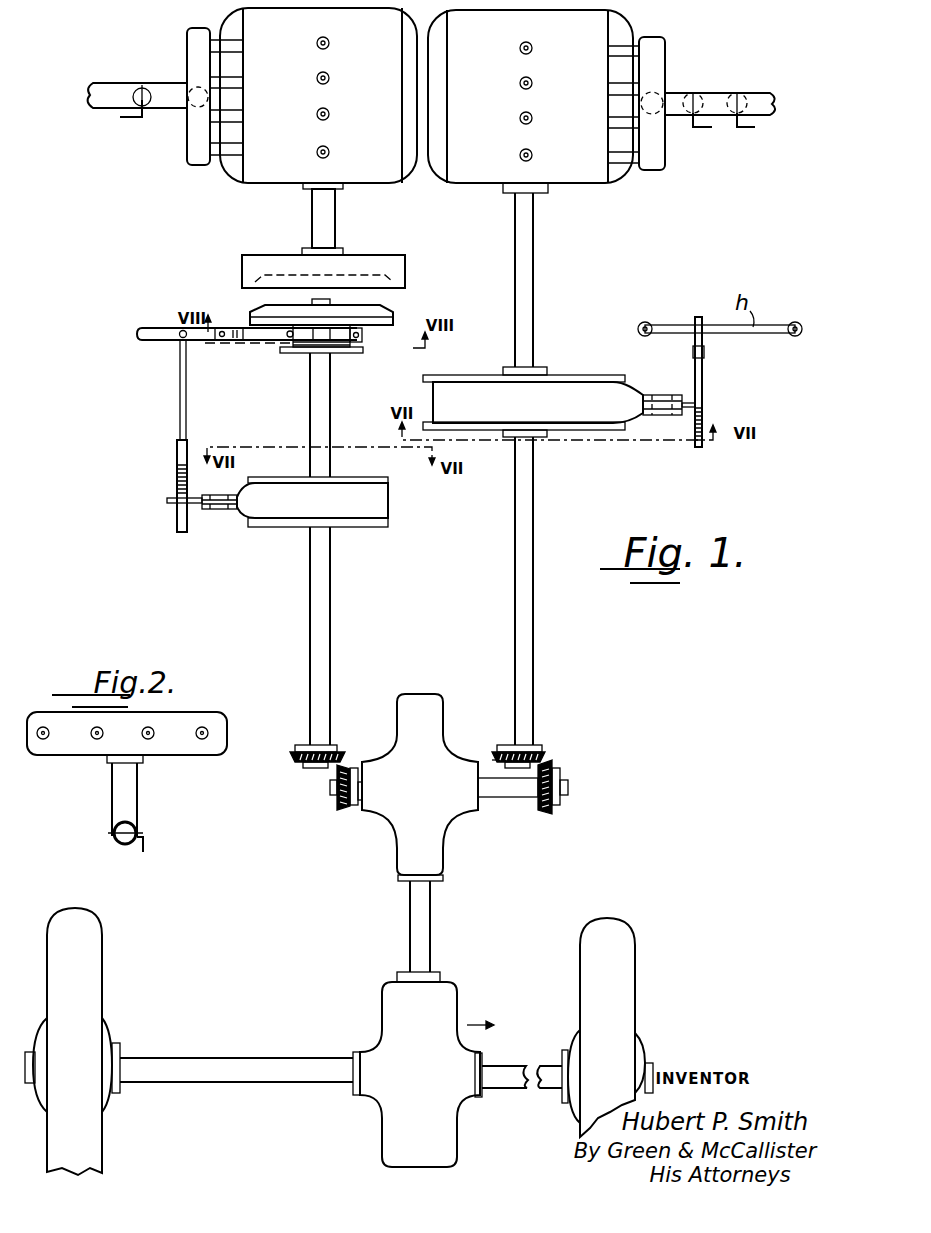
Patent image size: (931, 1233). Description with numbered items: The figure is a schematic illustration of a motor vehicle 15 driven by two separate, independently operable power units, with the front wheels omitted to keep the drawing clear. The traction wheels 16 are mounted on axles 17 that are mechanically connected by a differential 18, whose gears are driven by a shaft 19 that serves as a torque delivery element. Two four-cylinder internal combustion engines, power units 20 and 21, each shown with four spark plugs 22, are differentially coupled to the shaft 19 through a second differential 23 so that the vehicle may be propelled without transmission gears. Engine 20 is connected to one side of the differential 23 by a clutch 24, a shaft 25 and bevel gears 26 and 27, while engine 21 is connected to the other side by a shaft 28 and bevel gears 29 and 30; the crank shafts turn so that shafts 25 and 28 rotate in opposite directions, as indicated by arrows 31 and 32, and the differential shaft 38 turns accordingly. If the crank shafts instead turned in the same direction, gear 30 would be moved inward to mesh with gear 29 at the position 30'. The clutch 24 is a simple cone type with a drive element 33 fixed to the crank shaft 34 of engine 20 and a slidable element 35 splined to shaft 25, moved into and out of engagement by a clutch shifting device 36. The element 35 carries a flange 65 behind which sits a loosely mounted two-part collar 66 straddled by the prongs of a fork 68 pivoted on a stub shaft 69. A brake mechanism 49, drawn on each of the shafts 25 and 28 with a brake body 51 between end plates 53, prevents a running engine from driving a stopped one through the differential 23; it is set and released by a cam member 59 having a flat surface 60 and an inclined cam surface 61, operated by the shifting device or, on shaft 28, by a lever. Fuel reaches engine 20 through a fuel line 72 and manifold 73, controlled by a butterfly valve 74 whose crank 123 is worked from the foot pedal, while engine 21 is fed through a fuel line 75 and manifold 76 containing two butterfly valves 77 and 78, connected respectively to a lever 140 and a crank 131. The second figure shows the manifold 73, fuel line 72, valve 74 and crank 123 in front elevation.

In FIG. 1, the motor vehicle 15 is at (630, 710).
In FIG. 1, the traction wheels 16 is at (102, 951).
In FIG. 1, the axles 17 is at (270, 1066).
In FIG. 1, the differential 18 is at (430, 1064).
In FIG. 1, the shaft 19 is at (418, 916).
In FIG. 1, the power unit 20 is at (294, 112).
In FIG. 1, the power unit 21 is at (501, 109).
In FIG. 1, the spark plugs 22 is at (329, 46).
In FIG. 1, the differential 23 is at (440, 789).
In FIG. 1, the clutch 24 is at (200, 304).
In FIG. 1, the shaft 25 is at (331, 421).
In FIG. 1, the bevel gear 26 is at (296, 757).
In FIG. 1, the bevel gear 27 is at (340, 806).
In FIG. 1, the shaft 28 is at (535, 290).
In FIG. 1, the bevel gear 29 is at (546, 756).
In FIG. 1, the bevel gear 30 is at (567, 801).
In FIG. 1, the alternate position of bevel gear 30 30' is at (479, 740).
In FIG. 1, the arrow 31 is at (336, 612).
In FIG. 1, the arrow 32 is at (536, 651).
In FIG. 1, the drive element 33 is at (263, 263).
In FIG. 1, the crank shaft 34 is at (325, 205).
In FIG. 1, the slidable element 35 is at (393, 315).
In FIG. 1, the clutch shifting device 36 is at (272, 376).
In FIG. 1, the differential shaft 38 is at (487, 797).
In FIG. 1, the brake mechanism 49 is at (612, 462).
In FIG. 1, the sleeve 51 is at (433, 384).
In FIG. 1, the plate 53 is at (470, 374).
In FIG. 1, the cam member 59 is at (727, 373).
In FIG. 1, the flat surface 60 is at (695, 358).
In FIG. 1, the cam surface 61 is at (695, 421).
In FIG. 1, the flange 65 is at (346, 354).
In FIG. 1, the collar 66 is at (363, 336).
In FIG. 1, the fork 68 is at (200, 341).
In FIG. 1, the stub shaft 69 is at (222, 328).
In FIG. 1, the fuel line 72 is at (110, 104).
In FIG. 2, the fuel line 72 is at (137, 779).
In FIG. 1, the manifold 73 is at (192, 160).
In FIG. 2, the manifold 73 is at (185, 720).
In FIG. 1, the butterfly valve 74 is at (142, 85).
In FIG. 2, the butterfly valve 74 is at (136, 827).
In FIG. 1, the fuel line 75 is at (757, 112).
In FIG. 1, the manifold 76 is at (658, 56).
In FIG. 1, the butterfly valve 77 is at (698, 95).
In FIG. 1, the butterfly valve 78 is at (742, 95).
In FIG. 1, the crank 123 is at (143, 118).
In FIG. 2, the crank 123 is at (150, 851).
In FIG. 1, the crank 131 is at (740, 131).
In FIG. 1, the lever 140 is at (705, 130).